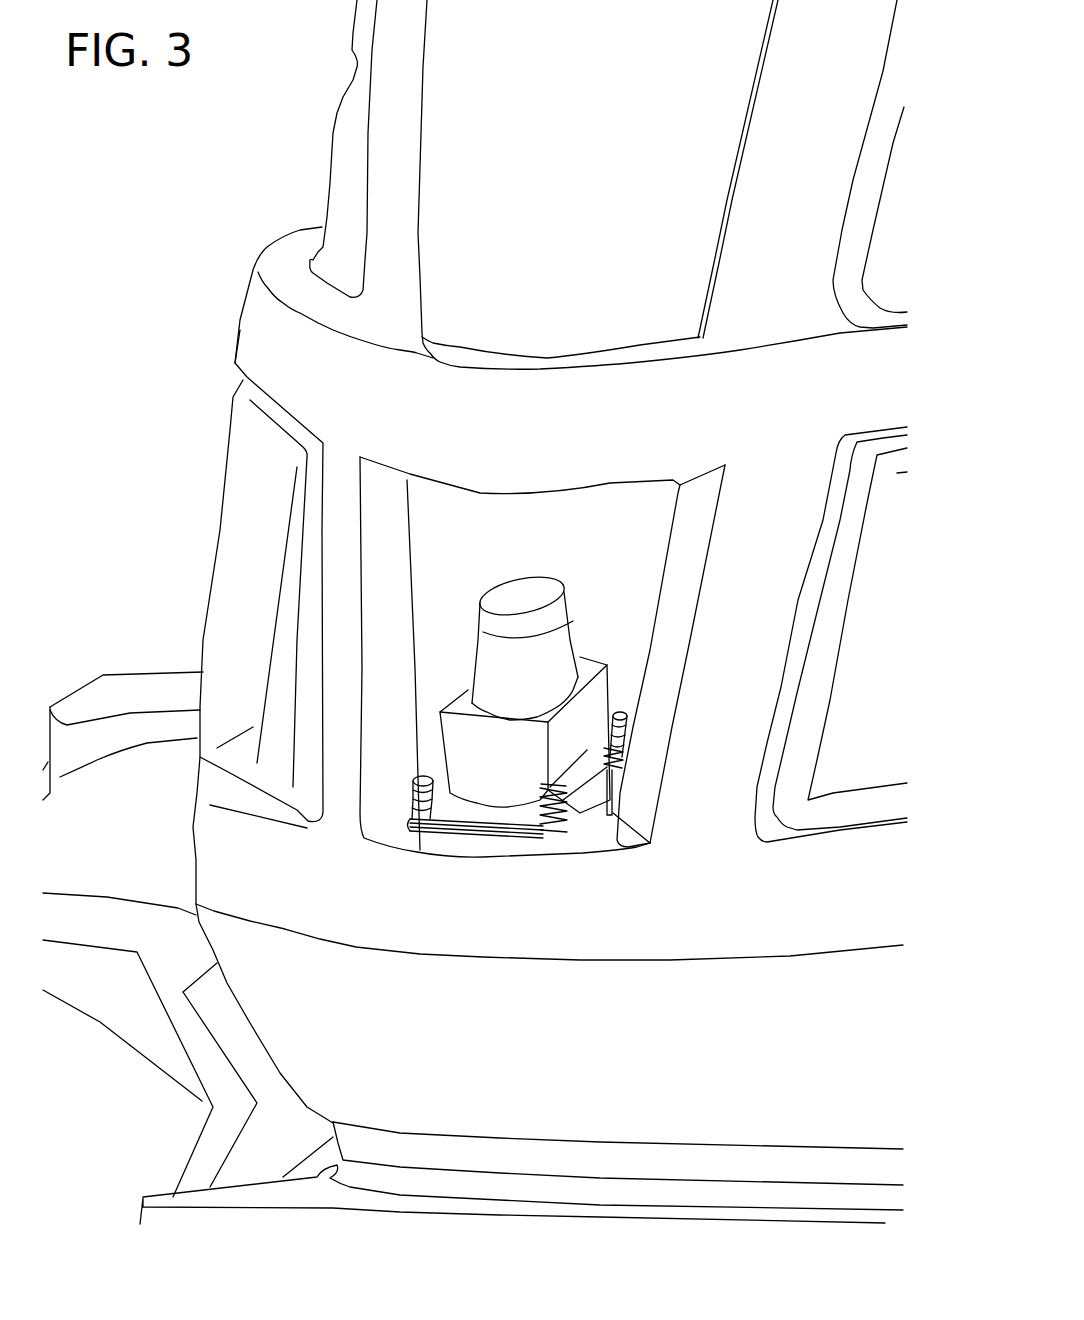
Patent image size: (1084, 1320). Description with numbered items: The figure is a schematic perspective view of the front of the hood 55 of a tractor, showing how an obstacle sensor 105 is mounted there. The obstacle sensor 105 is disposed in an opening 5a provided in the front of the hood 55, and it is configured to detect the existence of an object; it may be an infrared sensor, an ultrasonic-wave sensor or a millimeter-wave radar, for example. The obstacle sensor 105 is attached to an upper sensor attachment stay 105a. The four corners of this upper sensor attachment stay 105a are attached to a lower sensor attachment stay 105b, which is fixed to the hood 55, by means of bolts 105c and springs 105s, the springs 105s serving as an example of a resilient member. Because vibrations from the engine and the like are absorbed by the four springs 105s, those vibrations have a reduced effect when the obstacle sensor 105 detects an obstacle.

The hood 55 is at (242, 320).
The opening 5a is at (427, 522).
The obstacle sensor 105 is at (423, 739).
The upper sensor attachment stay 105a is at (453, 810).
The lower sensor attachment stay 105b is at (513, 833).
The bolt 105c is at (410, 787).
The spring 105s is at (420, 833).